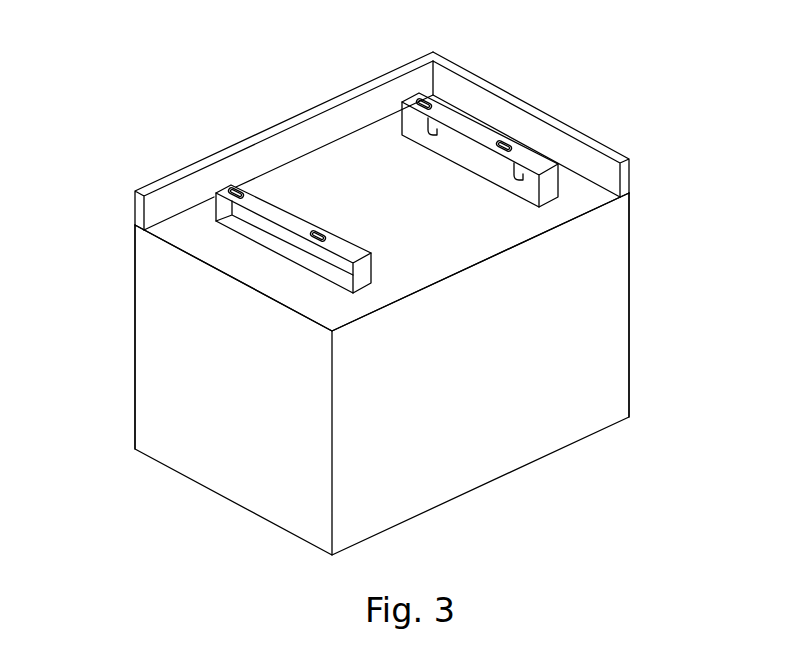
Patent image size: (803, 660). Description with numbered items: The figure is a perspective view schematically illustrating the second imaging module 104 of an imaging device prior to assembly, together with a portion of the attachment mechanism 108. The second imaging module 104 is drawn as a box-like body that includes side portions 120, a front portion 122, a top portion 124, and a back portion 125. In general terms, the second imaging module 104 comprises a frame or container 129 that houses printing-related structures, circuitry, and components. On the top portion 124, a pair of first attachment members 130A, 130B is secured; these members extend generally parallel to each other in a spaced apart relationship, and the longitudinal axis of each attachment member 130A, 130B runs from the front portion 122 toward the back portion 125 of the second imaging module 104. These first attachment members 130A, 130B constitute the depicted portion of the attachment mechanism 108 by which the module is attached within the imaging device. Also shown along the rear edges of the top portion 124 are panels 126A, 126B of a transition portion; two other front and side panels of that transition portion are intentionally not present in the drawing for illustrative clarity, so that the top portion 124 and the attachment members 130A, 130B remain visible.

The second imaging module 104 is at (380, 303).
The attachment mechanism 108 is at (387, 195).
The side portions 120 is at (380, 374).
The front portion 122 is at (500, 376).
The top portion 124 is at (458, 233).
The back portion 125 is at (135, 273).
The panel 126A is at (203, 175).
The panel 126B is at (580, 148).
The frame or container 129 is at (619, 354).
The first attachment member 130A is at (301, 205).
The first attachment member 130B is at (441, 157).